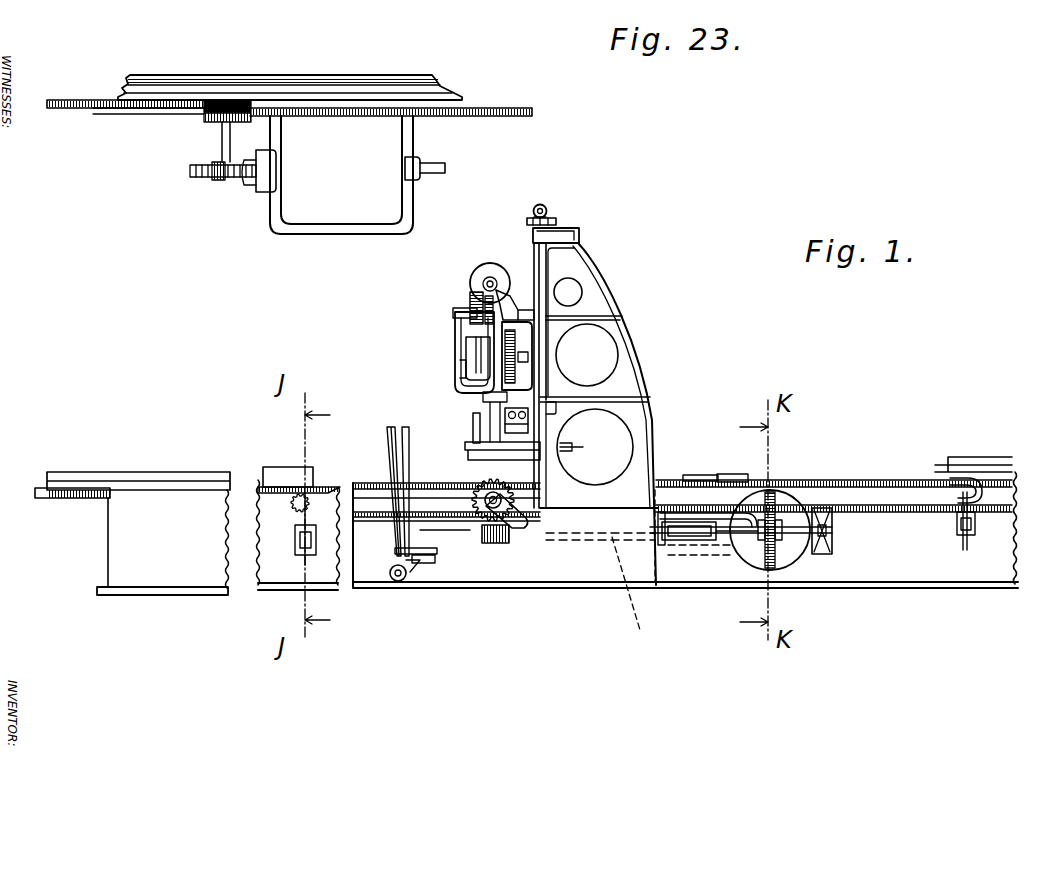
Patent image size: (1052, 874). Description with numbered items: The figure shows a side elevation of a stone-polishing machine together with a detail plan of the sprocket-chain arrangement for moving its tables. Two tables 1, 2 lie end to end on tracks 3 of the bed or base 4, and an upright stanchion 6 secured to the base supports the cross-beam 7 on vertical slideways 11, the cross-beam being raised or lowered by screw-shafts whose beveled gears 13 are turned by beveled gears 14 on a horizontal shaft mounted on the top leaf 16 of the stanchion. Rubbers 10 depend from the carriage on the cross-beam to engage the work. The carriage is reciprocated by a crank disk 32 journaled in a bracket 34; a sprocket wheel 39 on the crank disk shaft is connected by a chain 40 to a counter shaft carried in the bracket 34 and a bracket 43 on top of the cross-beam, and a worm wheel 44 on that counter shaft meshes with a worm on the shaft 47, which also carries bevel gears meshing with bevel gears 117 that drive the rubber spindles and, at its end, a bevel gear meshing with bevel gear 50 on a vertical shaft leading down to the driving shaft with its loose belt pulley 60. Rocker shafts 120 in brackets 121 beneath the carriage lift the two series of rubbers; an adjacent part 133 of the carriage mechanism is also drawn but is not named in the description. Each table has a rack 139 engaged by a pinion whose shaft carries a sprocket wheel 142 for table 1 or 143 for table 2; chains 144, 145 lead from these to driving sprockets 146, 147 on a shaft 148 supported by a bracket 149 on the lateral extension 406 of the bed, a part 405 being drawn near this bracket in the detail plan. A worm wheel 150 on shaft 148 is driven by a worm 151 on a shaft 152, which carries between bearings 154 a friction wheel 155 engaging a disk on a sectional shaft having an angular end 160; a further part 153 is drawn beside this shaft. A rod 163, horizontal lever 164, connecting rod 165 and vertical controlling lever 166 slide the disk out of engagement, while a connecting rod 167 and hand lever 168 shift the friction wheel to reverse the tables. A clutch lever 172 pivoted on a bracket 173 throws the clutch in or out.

In FIG. 1, the table 1 is at (170, 472).
In FIG. 1, the table 2 is at (963, 457).
In FIG. 23, the track 3 is at (298, 75).
In FIG. 1, the bed or base 4 is at (163, 542).
In FIG. 1, the stanchion 6 is at (648, 392).
In FIG. 1, the cross-beam 7 is at (547, 346).
In FIG. 1, the rubber 10 is at (595, 447).
In FIG. 1, the vertical slideway 11 is at (568, 292).
In FIG. 1, the beveled gear 13 is at (558, 220).
In FIG. 1, the beveled gear 14 is at (547, 207).
In FIG. 1, the top leaf 16 is at (582, 235).
In FIG. 1, the crank disk 32 is at (510, 376).
In FIG. 1, the bracket 34 is at (455, 333).
In FIG. 1, the sprocket wheel 39 is at (462, 370).
In FIG. 1, the chain 40 is at (468, 352).
In FIG. 1, the bracket 43 is at (514, 296).
In FIG. 1, the worm wheel 44 is at (470, 300).
In FIG. 1, the shaft 47 is at (476, 270).
In FIG. 1, the bevel gear 50 is at (733, 474).
In FIG. 1, the loose belt pulley 60 is at (692, 475).
In FIG. 1, the bevel gear 117 is at (466, 308).
In FIG. 1, the rocker shaft 120 is at (486, 406).
In FIG. 1, the bracket 121 is at (598, 404).
In FIG. 1, the guide plate 133 is at (473, 440).
In FIG. 1, the rack 139 is at (80, 498).
In FIG. 1, the sprocket wheel 142 is at (330, 490).
In FIG. 1, the sprocket wheel 143 is at (948, 492).
In FIG. 23, the chain 144 is at (62, 110).
In FIG. 1, the chain 144 is at (383, 513).
In FIG. 23, the chain 145 is at (530, 111).
In FIG. 1, the chain 145 is at (884, 513).
In FIG. 23, the driving sprocket 146 is at (226, 100).
In FIG. 23, the driving sprocket 147 is at (210, 122).
In FIG. 23, the shaft 148 is at (230, 138).
In FIG. 1, the shaft 148 is at (490, 508).
In FIG. 23, the bracket 149 is at (242, 186).
In FIG. 1, the bracket 149 is at (516, 530).
In FIG. 23, the worm wheel 150 is at (192, 173).
In FIG. 1, the worm wheel 150 is at (480, 490).
In FIG. 23, the worm 151 is at (213, 178).
In FIG. 1, the worm 151 is at (493, 545).
In FIG. 23, the shaft 152 is at (441, 165).
In FIG. 1, the shaft 152 is at (635, 592).
In FIG. 1, the cylinder 153 is at (700, 541).
In FIG. 1, the bearing 154 is at (822, 556).
In FIG. 1, the friction wheel 155 is at (766, 563).
In FIG. 1, the angular end 160 is at (786, 518).
In FIG. 1, the rod 163 is at (673, 542).
In FIG. 1, the horizontal lever 164 is at (412, 575).
In FIG. 1, the connecting rod 165 is at (412, 550).
In FIG. 1, the vertical controlling lever 166 is at (410, 433).
In FIG. 1, the connecting rod 167 is at (440, 523).
In FIG. 1, the hand lever 168 is at (391, 430).
In FIG. 1, the lever 172 is at (970, 510).
In FIG. 1, the bracket 173 is at (976, 528).
In FIG. 23, the bracket 405 is at (341, 175).
In FIG. 1, the lateral extension 406 is at (578, 577).